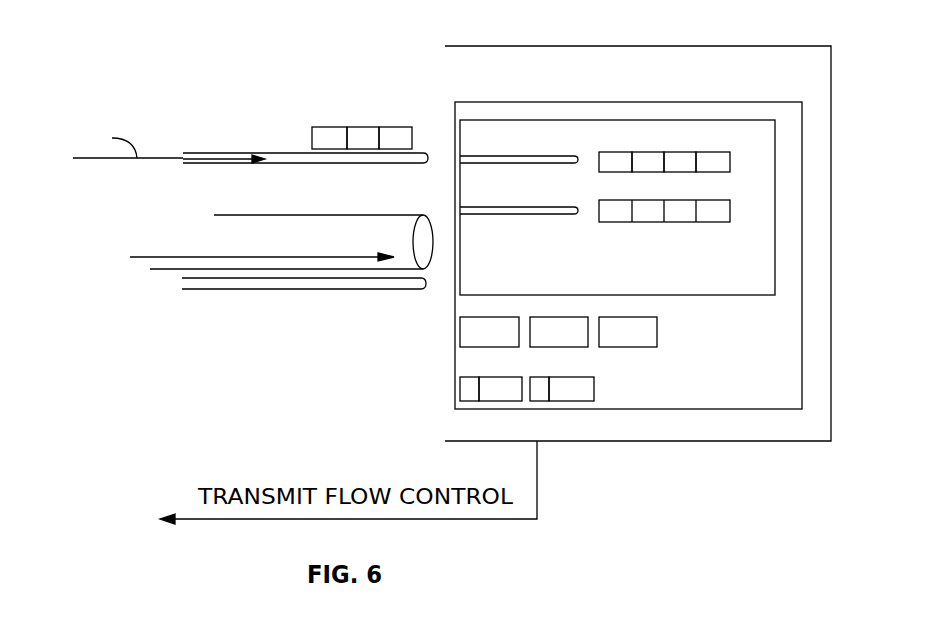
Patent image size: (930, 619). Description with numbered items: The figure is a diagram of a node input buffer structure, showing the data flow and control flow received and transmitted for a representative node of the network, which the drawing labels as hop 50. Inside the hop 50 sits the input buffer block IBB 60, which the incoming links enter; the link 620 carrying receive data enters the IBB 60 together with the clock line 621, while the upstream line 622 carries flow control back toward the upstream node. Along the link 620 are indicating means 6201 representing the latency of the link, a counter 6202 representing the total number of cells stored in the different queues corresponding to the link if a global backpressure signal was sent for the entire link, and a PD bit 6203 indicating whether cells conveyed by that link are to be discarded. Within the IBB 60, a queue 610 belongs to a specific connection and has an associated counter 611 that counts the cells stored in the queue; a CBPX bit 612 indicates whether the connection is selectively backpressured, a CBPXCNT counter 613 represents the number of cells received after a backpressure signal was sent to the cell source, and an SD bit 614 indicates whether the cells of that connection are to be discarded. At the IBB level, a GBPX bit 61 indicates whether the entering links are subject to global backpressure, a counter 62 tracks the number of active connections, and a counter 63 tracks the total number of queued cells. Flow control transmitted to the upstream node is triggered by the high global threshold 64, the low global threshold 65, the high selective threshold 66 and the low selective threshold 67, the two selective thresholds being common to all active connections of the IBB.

The hop 50 is at (595, 46).
The IBB 60 is at (597, 102).
The queue 610 is at (472, 156).
The counter 611 is at (627, 152).
The CBPX bit 612 is at (640, 172).
The CBPXCNT counter 613 is at (677, 152).
The SD bit 614 is at (703, 172).
The GBPX bit 61 is at (620, 317).
The counter 62 is at (483, 317).
The counter 63 is at (560, 317).
The high global threshold 64 is at (468, 377).
The low global threshold 65 is at (505, 377).
The high selective threshold 66 is at (545, 377).
The low selective threshold 67 is at (590, 377).
The link 620 is at (302, 215).
The clock line 621 is at (262, 153).
The upstream flow control line 622 is at (232, 284).
The indicating means 6201 is at (338, 127).
The counter 6202 is at (363, 124).
The PD bit 6203 is at (384, 127).